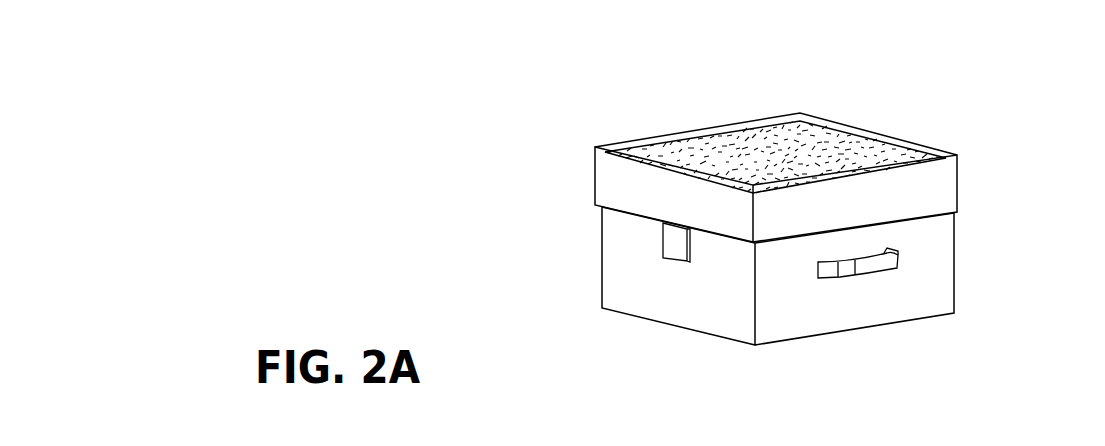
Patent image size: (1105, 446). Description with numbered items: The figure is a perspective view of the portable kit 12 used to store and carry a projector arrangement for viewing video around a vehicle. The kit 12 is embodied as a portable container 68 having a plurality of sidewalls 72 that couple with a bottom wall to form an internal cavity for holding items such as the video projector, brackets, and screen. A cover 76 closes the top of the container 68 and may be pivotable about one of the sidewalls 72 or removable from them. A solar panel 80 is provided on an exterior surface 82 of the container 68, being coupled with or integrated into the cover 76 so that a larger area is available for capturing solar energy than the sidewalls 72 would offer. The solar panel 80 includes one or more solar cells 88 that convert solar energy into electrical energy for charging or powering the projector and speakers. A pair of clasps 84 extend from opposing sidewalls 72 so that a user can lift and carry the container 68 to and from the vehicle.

The kit 12 is at (810, 112).
The container 68 is at (953, 248).
The sidewalls 72 is at (653, 290).
The cover 76 is at (595, 175).
The solar panel 80 is at (652, 148).
The exterior surface 82 is at (629, 235).
The clasps 84 is at (870, 280).
The solar cells 88 is at (877, 128).